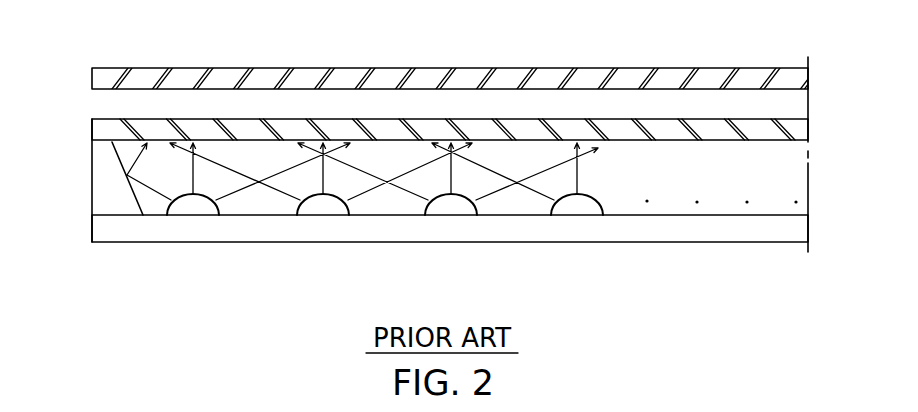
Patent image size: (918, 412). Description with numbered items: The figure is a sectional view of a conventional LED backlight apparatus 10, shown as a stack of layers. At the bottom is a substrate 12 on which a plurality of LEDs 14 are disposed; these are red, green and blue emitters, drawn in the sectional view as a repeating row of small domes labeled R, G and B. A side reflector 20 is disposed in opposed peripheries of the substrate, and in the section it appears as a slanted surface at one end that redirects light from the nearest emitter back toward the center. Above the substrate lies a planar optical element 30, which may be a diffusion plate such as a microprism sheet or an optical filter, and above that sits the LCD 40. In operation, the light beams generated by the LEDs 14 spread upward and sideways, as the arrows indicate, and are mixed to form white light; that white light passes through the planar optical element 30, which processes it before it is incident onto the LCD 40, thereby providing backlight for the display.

The LED backlight apparatus 10 is at (393, 34).
The substrate 12 is at (377, 233).
The LEDs 14 is at (210, 213).
The side reflector 20 is at (100, 182).
The planar optical element 30 is at (800, 127).
The LCD 40 is at (793, 73).